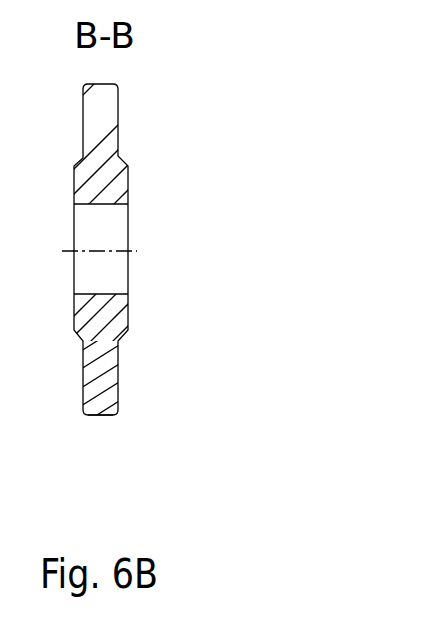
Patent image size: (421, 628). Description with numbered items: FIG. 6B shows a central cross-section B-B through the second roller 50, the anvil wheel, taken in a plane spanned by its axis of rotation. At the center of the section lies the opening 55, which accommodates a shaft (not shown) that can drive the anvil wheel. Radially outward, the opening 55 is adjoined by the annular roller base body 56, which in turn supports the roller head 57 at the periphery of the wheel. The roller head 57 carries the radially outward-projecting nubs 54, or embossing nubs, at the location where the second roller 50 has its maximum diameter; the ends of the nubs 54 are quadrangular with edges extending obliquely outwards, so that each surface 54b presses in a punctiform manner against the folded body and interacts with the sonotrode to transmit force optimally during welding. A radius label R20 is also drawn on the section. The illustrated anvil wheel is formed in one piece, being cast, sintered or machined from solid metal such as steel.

The second roller 50 is at (230, 382).
The nubs 54 is at (82, 412).
The surface 54b is at (102, 415).
The central opening 55 is at (118, 272).
The roller base body 56 is at (118, 315).
The roller head 57 is at (120, 133).
The radius R20 is at (128, 251).